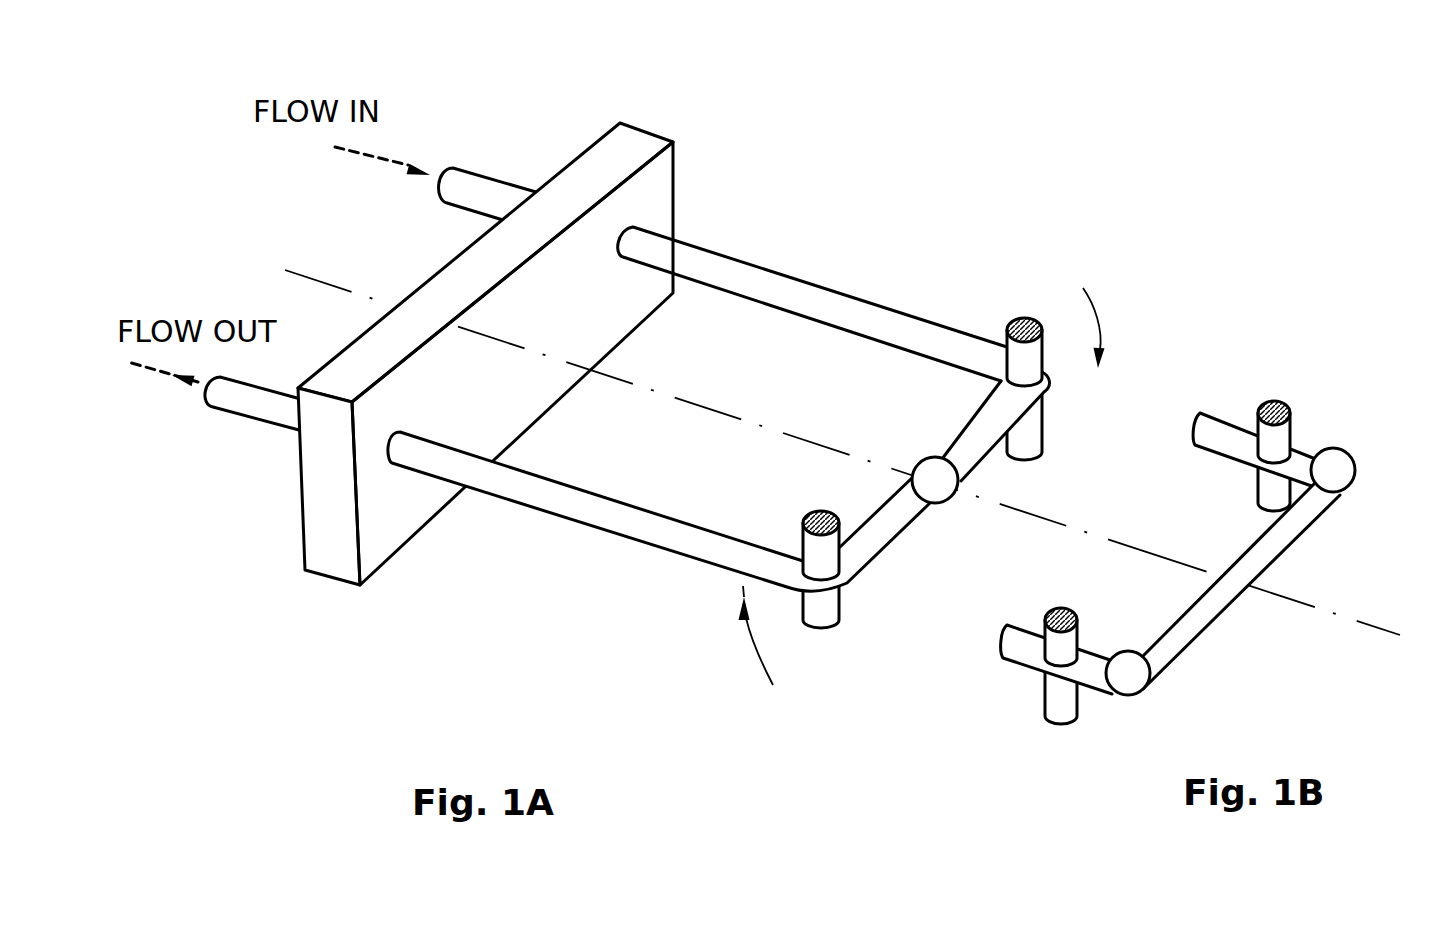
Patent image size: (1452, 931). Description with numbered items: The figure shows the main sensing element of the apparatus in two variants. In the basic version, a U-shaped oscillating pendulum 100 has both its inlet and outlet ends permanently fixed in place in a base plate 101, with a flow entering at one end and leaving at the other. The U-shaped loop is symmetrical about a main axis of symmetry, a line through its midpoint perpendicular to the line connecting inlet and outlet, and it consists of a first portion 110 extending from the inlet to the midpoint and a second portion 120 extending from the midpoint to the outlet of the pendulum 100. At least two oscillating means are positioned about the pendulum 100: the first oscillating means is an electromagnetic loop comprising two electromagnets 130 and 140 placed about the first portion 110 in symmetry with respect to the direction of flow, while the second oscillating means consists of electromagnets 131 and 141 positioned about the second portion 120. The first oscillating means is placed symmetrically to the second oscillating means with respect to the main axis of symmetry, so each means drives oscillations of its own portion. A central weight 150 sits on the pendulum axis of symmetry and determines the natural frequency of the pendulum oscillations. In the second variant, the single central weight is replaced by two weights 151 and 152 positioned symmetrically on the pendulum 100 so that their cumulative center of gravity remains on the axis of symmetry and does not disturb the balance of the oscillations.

In FIG. 1A, the base plate 101 is at (647, 131).
In FIG. 1A, the U-shaped oscillating pendulum 100 is at (792, 287).
In FIG. 1A, the first portion 110 is at (932, 320).
In FIG. 1A, the second portion 120 is at (698, 562).
In FIG. 1A, the electromagnet 130 is at (1025, 313).
In FIG. 1B, the electromagnet 130 is at (1278, 398).
In FIG. 1A, the electromagnet 140 is at (1032, 437).
In FIG. 1B, the electromagnet 140 is at (1257, 493).
In FIG. 1A, the electromagnet 131 is at (820, 510).
In FIG. 1B, the electromagnet 131 is at (1067, 607).
In FIG. 1A, the electromagnet 141 is at (832, 617).
In FIG. 1B, the electromagnet 141 is at (1043, 707).
In FIG. 1A, the central weight 150 is at (946, 499).
In FIG. 1B, the weight 151 is at (1142, 697).
In FIG. 1B, the weight 152 is at (1357, 477).